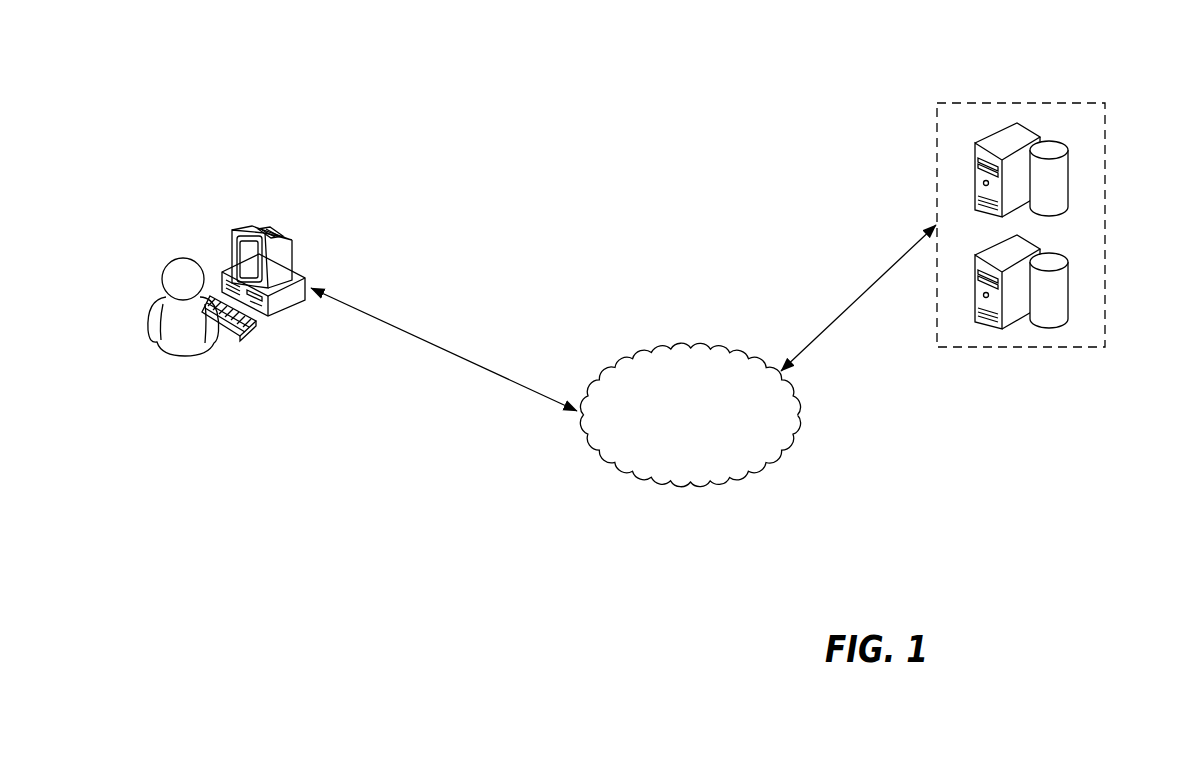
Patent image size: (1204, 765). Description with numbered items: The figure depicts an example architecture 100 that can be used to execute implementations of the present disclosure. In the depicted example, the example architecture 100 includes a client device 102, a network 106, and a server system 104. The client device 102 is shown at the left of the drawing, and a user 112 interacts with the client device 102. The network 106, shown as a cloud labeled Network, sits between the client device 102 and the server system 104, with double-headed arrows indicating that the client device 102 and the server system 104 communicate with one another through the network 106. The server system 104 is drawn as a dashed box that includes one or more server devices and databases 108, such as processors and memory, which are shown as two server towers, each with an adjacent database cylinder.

The example architecture 100 is at (539, 99).
The client device 102 is at (232, 232).
The server system 104 is at (1105, 226).
The network 106 is at (698, 343).
The server devices and databases 108 is at (975, 168).
The user 112 is at (181, 358).